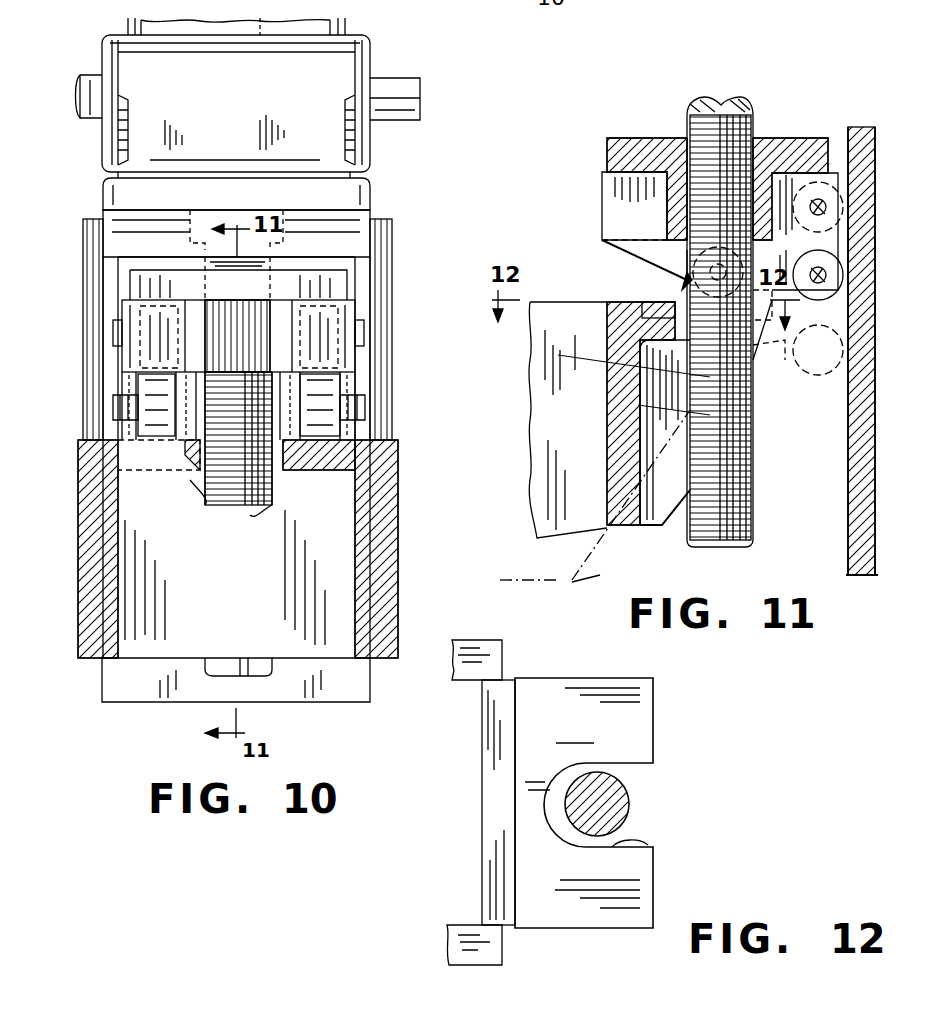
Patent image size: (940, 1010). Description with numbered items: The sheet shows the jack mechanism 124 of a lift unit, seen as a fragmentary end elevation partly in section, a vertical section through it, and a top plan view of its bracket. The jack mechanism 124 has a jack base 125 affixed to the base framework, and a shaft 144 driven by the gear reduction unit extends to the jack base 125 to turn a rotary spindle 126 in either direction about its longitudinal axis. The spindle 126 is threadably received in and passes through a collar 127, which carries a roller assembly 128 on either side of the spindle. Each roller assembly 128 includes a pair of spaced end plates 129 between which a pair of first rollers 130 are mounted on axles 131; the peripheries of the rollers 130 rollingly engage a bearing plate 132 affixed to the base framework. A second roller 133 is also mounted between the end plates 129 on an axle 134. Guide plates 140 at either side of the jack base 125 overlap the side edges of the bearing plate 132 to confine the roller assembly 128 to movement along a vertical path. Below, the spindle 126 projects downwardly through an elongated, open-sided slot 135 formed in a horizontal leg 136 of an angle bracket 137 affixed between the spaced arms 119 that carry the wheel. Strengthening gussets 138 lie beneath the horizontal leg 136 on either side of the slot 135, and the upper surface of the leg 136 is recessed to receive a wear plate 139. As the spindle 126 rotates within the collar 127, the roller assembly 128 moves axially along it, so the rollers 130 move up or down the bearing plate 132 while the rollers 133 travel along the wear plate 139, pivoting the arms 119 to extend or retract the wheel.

In FIG. 10, the spaced arms 119 is at (85, 597).
In FIG. 11, the spaced arms 119 is at (555, 488).
In FIG. 12, the spaced arms 119 is at (467, 672).
In FIG. 11, the jack mechanism 124 is at (632, 132).
In FIG. 10, the jack base 125 is at (358, 53).
In FIG. 10, the rotary spindle 126 is at (228, 482).
In FIG. 11, the rotary spindle 126 is at (700, 118).
In FIG. 12, the rotary spindle 126 is at (629, 808).
In FIG. 11, the collar 127 is at (782, 150).
In FIG. 10, the roller assembly 128 is at (360, 311).
In FIG. 11, the roller assembly 128 is at (597, 196).
In FIG. 10, the end plates 129 is at (182, 423).
In FIG. 11, the end plates 129 is at (606, 229).
In FIG. 10, the first rollers 130 is at (300, 310).
In FIG. 11, the first rollers 130 is at (840, 244).
In FIG. 10, the axles 131 is at (113, 335).
In FIG. 11, the axles 131 is at (830, 207).
In FIG. 11, the bearing plate 132 is at (857, 135).
In FIG. 10, the second roller 133 is at (148, 382).
In FIG. 11, the second roller 133 is at (700, 262).
In FIG. 10, the axle 134 is at (115, 402).
In FIG. 11, the slot 135 is at (758, 305).
In FIG. 12, the slot 135 is at (648, 845).
In FIG. 12, the horizontal leg 136 is at (655, 718).
In FIG. 11, the angle bracket 137 is at (615, 382).
In FIG. 12, the angle bracket 137 is at (490, 792).
In FIG. 11, the strengthening gussets 138 is at (653, 527).
In FIG. 11, the wear plate 139 is at (665, 305).
In FIG. 10, the guide plates 140 is at (80, 262).
In FIG. 10, the shafts 144 is at (407, 115).